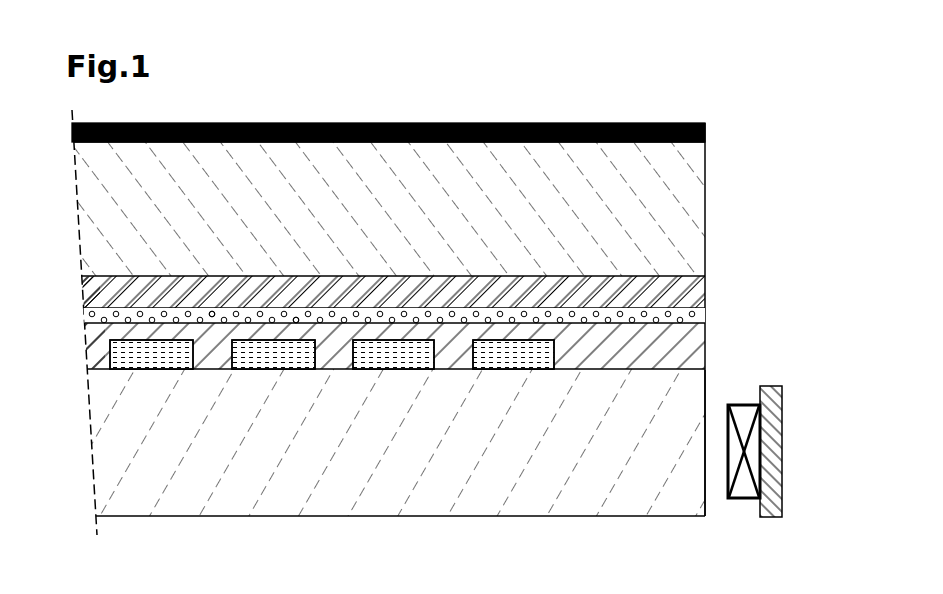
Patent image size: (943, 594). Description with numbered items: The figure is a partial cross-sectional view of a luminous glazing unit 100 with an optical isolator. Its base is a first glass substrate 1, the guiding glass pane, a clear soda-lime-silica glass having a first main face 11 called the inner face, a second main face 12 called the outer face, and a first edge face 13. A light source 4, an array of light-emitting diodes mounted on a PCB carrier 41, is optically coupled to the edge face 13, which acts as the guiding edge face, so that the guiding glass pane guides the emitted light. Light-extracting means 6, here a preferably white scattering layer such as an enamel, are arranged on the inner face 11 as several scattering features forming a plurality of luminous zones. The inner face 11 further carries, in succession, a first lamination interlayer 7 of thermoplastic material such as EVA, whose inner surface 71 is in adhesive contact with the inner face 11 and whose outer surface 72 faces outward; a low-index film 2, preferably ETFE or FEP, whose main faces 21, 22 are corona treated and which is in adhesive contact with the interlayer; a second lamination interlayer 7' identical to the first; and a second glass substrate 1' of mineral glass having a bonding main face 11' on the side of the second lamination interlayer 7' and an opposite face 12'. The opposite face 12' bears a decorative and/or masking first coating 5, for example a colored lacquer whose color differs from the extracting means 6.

The luminous glazing unit 100 is at (654, 82).
The first glass substrate 1 is at (396, 442).
The second glass substrate 1' is at (389, 209).
The decorative and/or masking first coating 5 is at (516, 123).
The second main face 12 is at (400, 547).
The opposite face 12' is at (389, 107).
The first main face 11 is at (395, 384).
The bonding main face 11' is at (393, 261).
The first edge face 13 is at (705, 501).
The low-index film 2 is at (105, 313).
The main face of low-index film 21 is at (210, 325).
The main face of low-index film 22 is at (295, 322).
The light-extracting means 6 is at (262, 352).
The first lamination interlayer 7 is at (76, 369).
The second lamination interlayer 7' is at (66, 267).
The inner surface 71 is at (100, 371).
The outer surface 72 is at (175, 326).
The light source 4 is at (742, 498).
The PCB carrier 41 is at (772, 386).